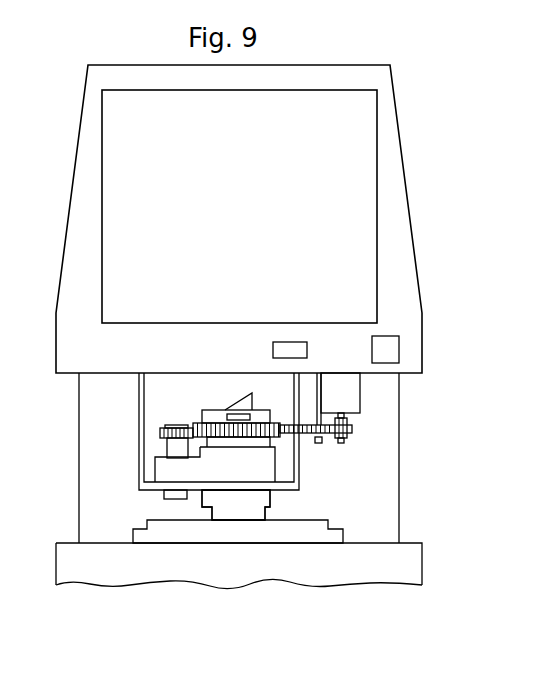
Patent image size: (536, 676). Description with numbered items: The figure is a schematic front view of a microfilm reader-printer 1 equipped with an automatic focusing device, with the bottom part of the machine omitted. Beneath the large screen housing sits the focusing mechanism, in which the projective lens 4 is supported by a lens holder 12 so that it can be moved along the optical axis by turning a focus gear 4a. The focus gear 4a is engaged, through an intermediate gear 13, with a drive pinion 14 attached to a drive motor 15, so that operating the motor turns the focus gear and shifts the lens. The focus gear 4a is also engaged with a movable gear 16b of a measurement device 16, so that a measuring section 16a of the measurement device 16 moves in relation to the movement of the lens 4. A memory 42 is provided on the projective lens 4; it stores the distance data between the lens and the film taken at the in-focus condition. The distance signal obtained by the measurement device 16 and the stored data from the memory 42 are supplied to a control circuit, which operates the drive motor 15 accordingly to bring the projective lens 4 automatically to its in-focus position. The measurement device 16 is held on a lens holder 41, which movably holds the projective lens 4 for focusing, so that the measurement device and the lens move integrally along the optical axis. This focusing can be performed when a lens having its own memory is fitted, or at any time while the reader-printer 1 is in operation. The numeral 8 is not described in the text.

The micro reader-printer 1 is at (428, 352).
The display screen 8 is at (365, 223).
The lens holder 12 is at (282, 487).
The projective lens 4 is at (242, 443).
The lens holder 41 is at (225, 477).
The focus gear 4a is at (210, 420).
The memory 42 is at (212, 420).
The drive pinion 14 is at (352, 428).
The intermediate gear 13 is at (308, 415).
The drive motor 15 is at (350, 398).
The measurement device 16 is at (172, 425).
The movable gear 16b is at (162, 433).
The measuring section 16a is at (172, 499).